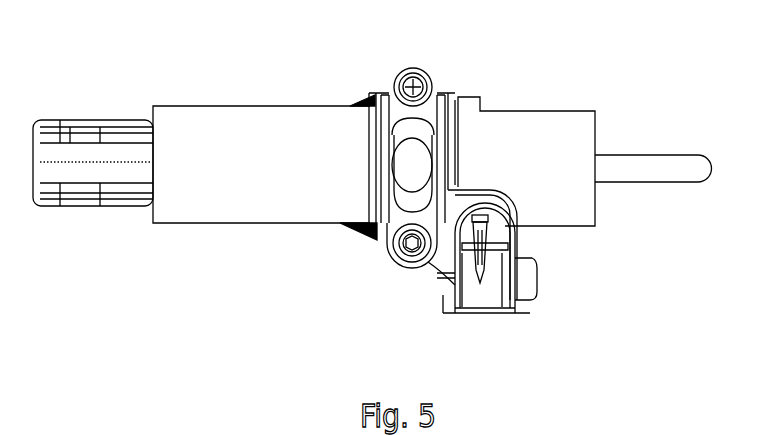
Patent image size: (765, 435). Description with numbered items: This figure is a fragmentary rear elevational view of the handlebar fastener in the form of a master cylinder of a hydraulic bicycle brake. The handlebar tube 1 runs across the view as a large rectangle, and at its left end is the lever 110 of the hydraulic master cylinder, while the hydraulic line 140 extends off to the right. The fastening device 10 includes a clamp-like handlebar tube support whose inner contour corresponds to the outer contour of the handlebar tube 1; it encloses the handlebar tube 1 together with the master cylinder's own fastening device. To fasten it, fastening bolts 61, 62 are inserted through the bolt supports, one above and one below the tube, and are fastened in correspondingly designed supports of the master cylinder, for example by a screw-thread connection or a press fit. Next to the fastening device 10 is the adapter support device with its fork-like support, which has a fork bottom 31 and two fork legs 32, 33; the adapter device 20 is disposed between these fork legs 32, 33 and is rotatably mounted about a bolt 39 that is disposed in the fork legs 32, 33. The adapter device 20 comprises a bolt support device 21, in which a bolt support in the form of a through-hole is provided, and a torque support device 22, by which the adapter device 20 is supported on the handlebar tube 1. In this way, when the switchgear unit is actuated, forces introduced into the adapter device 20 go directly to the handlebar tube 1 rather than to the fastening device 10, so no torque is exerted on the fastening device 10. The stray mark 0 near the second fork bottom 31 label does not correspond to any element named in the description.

The handlebar tube 1 is at (207, 135).
The fastening device 10 is at (458, 138).
The adapter device 20 is at (477, 297).
The bolt support device 21 is at (493, 300).
The torque support device 22 is at (527, 288).
The fork bottom 31 is at (502, 190).
The fork leg 32 is at (437, 258).
The fork leg 33 is at (510, 313).
The bolt 39 is at (525, 290).
The fastening bolt 61 is at (438, 83).
The fastening bolt 62 is at (383, 243).
The lever 110 is at (60, 148).
The hydraulic line 140 is at (627, 167).
The unlabeled element 0 is at (655, 132).